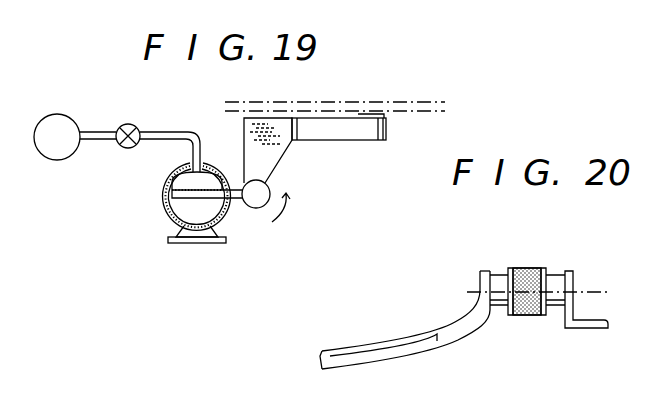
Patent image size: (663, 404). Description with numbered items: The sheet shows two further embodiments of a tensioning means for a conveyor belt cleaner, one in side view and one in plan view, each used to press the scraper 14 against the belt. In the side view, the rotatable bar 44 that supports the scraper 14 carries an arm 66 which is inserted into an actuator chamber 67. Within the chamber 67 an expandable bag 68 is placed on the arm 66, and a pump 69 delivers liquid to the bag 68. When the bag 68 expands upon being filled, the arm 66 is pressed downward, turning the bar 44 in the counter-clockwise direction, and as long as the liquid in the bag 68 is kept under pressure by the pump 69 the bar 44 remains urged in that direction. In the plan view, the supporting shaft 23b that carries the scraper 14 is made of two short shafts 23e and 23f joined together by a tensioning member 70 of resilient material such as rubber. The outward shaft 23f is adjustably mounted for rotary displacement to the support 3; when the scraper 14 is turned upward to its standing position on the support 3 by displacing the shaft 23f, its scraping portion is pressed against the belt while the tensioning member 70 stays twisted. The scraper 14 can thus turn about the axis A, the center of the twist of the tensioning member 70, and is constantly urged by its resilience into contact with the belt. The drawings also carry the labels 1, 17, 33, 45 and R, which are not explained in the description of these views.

In FIG. 19, the vehicle body 1 is at (407, 114).
In FIG. 20, the support 3 is at (596, 330).
In FIG. 19, the scraper 14 is at (322, 154).
In FIG. 20, the scraper 14 is at (402, 369).
In FIG. 19, the rail member 17 is at (368, 110).
In FIG. 20, the rail member 17 is at (357, 352).
In FIG. 19, the damper device 33 is at (180, 112).
In FIG. 20, the damper device 33 is at (589, 243).
In FIG. 19, the rotatable bar 44 is at (255, 208).
In FIG. 19, the guide rail 45 is at (354, 141).
In FIG. 19, the arm 66 is at (178, 210).
In FIG. 19, the actuator chamber 67 is at (155, 212).
In FIG. 19, the expandable bag 68 is at (183, 181).
In FIG. 19, the pump 69 is at (73, 122).
In FIG. 20, the tensioning member 70 is at (534, 268).
In FIG. 20, the supporting shaft 23b is at (512, 256).
In FIG. 20, the short shaft 23e is at (500, 312).
In FIG. 20, the short shaft 23f is at (553, 312).
In FIG. 19, the direction R is at (413, 91).
In FIG. 20, the axis A is at (596, 292).